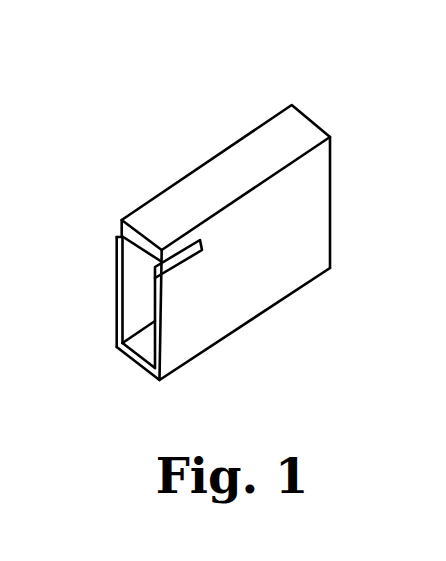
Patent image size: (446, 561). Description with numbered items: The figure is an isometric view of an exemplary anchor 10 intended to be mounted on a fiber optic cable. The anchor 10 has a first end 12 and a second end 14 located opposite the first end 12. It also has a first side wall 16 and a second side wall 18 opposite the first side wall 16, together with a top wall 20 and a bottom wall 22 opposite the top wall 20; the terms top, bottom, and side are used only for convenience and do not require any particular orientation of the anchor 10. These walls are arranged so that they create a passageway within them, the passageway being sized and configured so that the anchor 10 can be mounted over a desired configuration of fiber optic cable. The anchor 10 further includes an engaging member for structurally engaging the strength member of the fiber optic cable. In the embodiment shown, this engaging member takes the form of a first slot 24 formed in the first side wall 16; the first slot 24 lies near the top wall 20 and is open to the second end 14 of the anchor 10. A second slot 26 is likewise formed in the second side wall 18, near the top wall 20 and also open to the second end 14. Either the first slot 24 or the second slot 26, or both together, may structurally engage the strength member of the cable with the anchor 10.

The anchor 10 is at (165, 131).
The first end 12 is at (330, 212).
The second end 14 is at (158, 307).
The first side wall 16 is at (287, 260).
The second side wall 18 is at (117, 263).
The top wall 20 is at (291, 129).
The bottom wall 22 is at (138, 362).
The first slot 24 is at (188, 258).
The second slot 26 is at (121, 233).